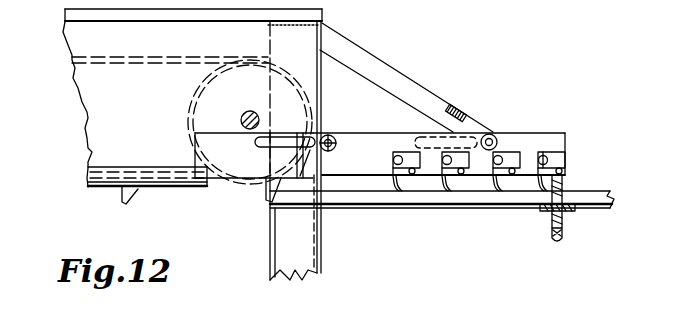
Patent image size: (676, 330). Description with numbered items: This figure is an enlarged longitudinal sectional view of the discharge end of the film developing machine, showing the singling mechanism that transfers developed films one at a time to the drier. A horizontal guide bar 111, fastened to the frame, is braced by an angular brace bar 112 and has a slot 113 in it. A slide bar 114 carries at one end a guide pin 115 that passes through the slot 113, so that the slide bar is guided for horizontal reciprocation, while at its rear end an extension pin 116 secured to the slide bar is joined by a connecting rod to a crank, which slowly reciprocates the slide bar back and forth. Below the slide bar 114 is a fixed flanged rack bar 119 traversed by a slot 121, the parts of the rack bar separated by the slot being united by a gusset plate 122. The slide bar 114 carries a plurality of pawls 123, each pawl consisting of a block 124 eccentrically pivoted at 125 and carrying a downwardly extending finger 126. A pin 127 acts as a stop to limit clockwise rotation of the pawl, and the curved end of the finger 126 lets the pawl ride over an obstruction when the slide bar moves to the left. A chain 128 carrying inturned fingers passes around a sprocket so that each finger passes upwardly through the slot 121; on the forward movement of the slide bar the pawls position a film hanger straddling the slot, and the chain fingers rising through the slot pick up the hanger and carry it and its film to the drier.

The horizontal guide bar 111 is at (193, 153).
The angular brace bar 112 is at (423, 63).
The slot 113 is at (423, 132).
The slide bar 114 is at (300, 178).
The guide pin 115 is at (490, 133).
The extension pin 116 is at (332, 133).
The fixed flanged rack bar 119 is at (357, 207).
The slot 121 is at (577, 195).
The gusset plate 122 is at (553, 211).
The pawl 123 is at (512, 155).
The block 124 is at (566, 160).
The pivot 125 is at (562, 150).
The finger 126 is at (540, 185).
The pin 127 is at (500, 177).
The chain 128 is at (563, 234).